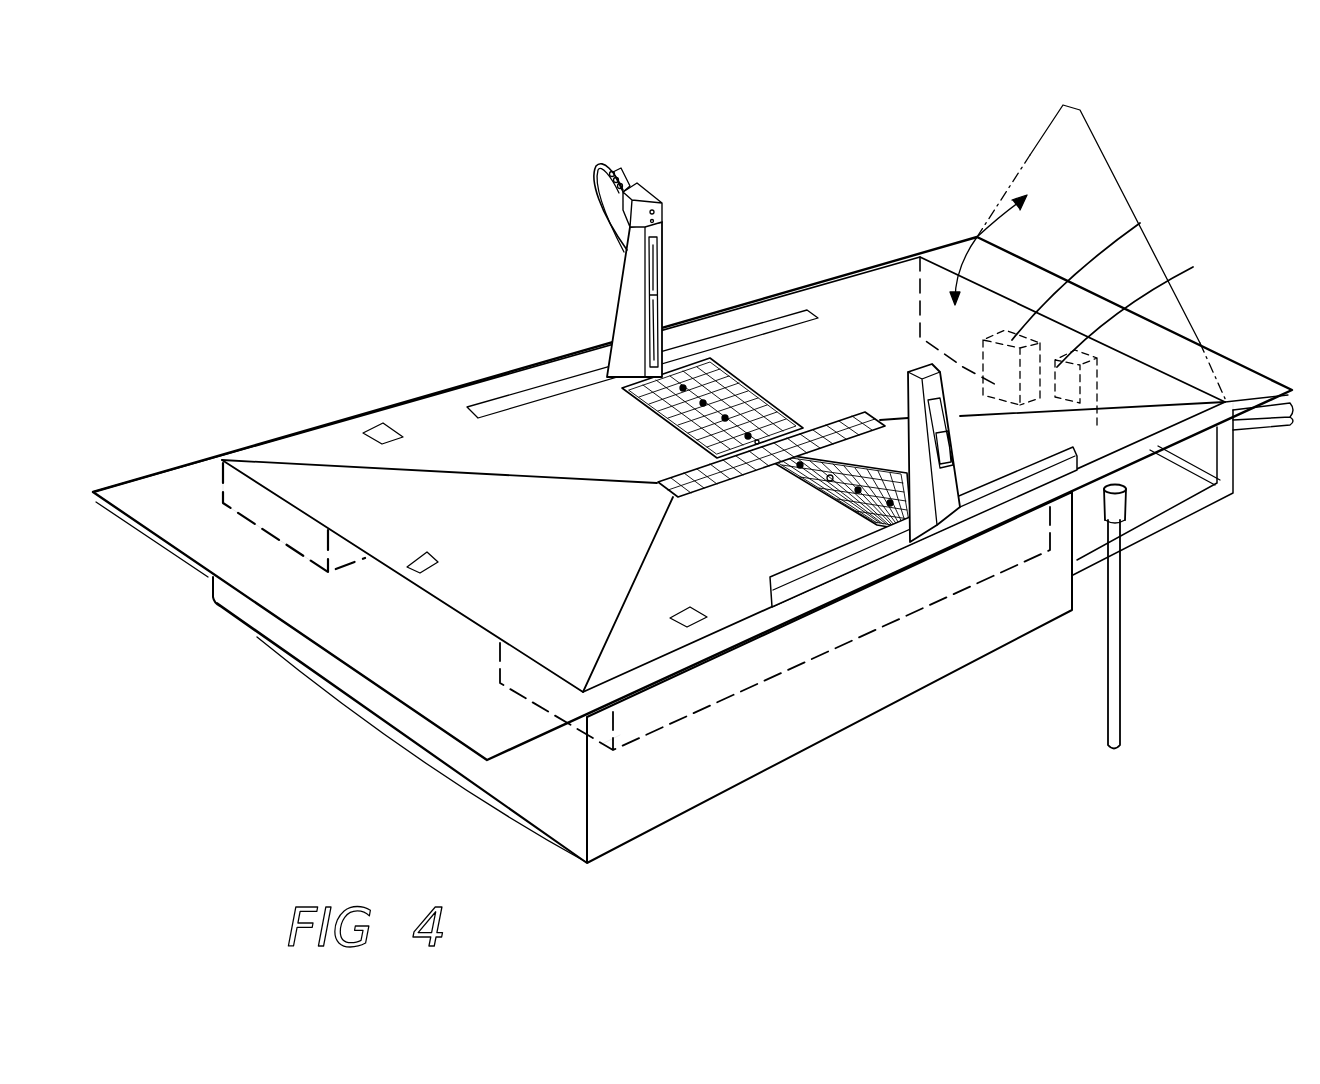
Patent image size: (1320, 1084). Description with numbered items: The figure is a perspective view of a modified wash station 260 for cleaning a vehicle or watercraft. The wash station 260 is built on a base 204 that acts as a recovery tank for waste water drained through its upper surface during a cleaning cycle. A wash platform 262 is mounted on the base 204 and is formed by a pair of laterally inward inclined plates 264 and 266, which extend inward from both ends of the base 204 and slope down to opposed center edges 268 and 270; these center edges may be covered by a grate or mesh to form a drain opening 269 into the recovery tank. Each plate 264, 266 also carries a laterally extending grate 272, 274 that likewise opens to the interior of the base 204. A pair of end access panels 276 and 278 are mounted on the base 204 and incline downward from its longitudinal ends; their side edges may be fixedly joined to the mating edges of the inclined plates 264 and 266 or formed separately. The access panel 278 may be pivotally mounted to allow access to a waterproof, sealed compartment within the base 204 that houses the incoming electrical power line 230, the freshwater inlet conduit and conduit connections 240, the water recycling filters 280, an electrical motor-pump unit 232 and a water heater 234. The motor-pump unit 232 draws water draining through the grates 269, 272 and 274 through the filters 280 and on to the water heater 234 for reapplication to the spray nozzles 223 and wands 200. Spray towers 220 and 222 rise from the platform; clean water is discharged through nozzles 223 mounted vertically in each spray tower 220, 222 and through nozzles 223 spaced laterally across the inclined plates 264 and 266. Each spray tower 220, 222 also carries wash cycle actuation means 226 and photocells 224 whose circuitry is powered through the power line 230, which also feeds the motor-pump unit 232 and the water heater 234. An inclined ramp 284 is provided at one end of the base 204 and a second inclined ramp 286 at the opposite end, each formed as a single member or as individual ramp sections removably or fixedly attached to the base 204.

The wand 200 is at (615, 175).
The base 204 is at (403, 735).
The spray tower 220 is at (594, 317).
The spray tower 222 is at (941, 500).
The spray nozzles 223 is at (658, 313).
The photocells 224 is at (664, 212).
The actuation means 226 is at (660, 203).
The incoming electrical power lines 230 is at (1245, 496).
The electrical motor-pump unit 232 is at (1193, 257).
The water heater 234 is at (1163, 225).
The freshwater inlet conduit and conduit connections 240 is at (1120, 712).
The modified wash station 260 is at (451, 238).
The wash platform 262 is at (423, 441).
The inclined plate 264 is at (518, 443).
The inclined plate 266 is at (628, 658).
The center edge 268 is at (680, 478).
The drain opening 269 is at (740, 478).
The center edge 270 is at (705, 498).
The laterally extending grate 272 is at (810, 356).
The laterally extending grate 274 is at (930, 468).
The end access panel 276 is at (320, 490).
The end access panel 278 is at (860, 407).
The water recycling filters 280 is at (1215, 297).
The inclined ramp 284 is at (323, 623).
The second inclined ramp 286 is at (1243, 390).